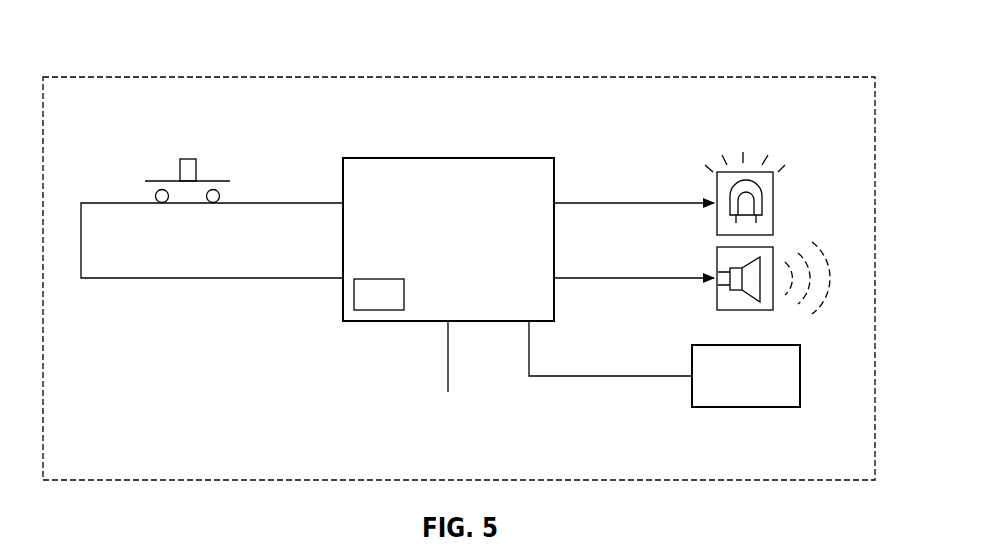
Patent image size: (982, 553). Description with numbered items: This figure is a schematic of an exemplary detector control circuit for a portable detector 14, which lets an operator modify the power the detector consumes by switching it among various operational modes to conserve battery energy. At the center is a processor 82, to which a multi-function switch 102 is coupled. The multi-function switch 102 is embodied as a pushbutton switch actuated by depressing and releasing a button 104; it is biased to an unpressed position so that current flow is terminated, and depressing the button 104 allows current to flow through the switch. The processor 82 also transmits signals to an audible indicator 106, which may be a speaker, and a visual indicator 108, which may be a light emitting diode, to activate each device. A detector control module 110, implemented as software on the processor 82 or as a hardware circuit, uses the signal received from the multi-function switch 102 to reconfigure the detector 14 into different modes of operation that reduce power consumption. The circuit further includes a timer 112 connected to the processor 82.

The detector 14 is at (746, 77).
The processor 82 is at (458, 158).
The multi-function switch 102 is at (211, 184).
The button 104 is at (212, 164).
The audible indicator 106 is at (775, 252).
The visual indicator 108 is at (775, 193).
The detector control module 110 is at (379, 301).
The timer 112 is at (800, 378).